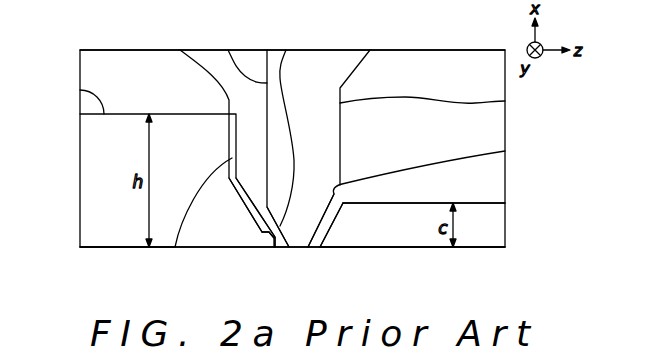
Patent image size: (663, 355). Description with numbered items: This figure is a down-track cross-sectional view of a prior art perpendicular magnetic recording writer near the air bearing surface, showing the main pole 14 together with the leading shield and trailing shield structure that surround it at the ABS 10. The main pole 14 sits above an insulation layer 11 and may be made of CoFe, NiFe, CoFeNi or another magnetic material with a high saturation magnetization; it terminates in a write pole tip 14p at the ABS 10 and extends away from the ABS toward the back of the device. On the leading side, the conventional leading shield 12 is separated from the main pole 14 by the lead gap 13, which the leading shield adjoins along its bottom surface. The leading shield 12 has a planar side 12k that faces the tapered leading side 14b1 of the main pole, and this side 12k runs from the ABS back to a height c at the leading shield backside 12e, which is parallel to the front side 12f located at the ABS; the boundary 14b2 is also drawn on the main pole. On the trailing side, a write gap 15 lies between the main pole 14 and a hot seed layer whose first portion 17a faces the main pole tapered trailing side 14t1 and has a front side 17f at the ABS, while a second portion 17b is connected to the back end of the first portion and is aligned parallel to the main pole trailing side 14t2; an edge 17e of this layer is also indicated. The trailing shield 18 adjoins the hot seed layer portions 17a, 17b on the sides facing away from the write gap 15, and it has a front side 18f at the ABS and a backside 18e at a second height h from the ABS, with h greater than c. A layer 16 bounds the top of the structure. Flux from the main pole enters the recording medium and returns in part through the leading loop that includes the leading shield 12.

The ABS 10 is at (527, 247).
The insulation layer 11 is at (422, 62).
The leading shield 12 is at (497, 220).
The leading shield backside 12e is at (482, 203).
The front side 12f is at (400, 247).
The planar side 12k is at (335, 220).
The lead gap 13 is at (322, 230).
The main pole 14 is at (335, 62).
The main pole tapered trailing side 14t1 is at (286, 50).
The main pole trailing side 14t2 is at (228, 50).
The write pole tip 14p is at (296, 247).
The tapered leading side 14b1 is at (505, 151).
The main pole second boundary 14b2 is at (505, 101).
The write gap 15 is at (276, 240).
The top boundary layer 16 is at (92, 62).
The first portion of hot seed layer 17a is at (248, 213).
The second portion of hot seed layer 17b is at (175, 247).
The side gap edge 17e is at (180, 50).
The front side of first hot seed layer portion 17f is at (270, 247).
The trailing shield 18 is at (92, 170).
The backside of trailing shield 18e is at (80, 88).
The front side of trailing shield 18f is at (115, 247).